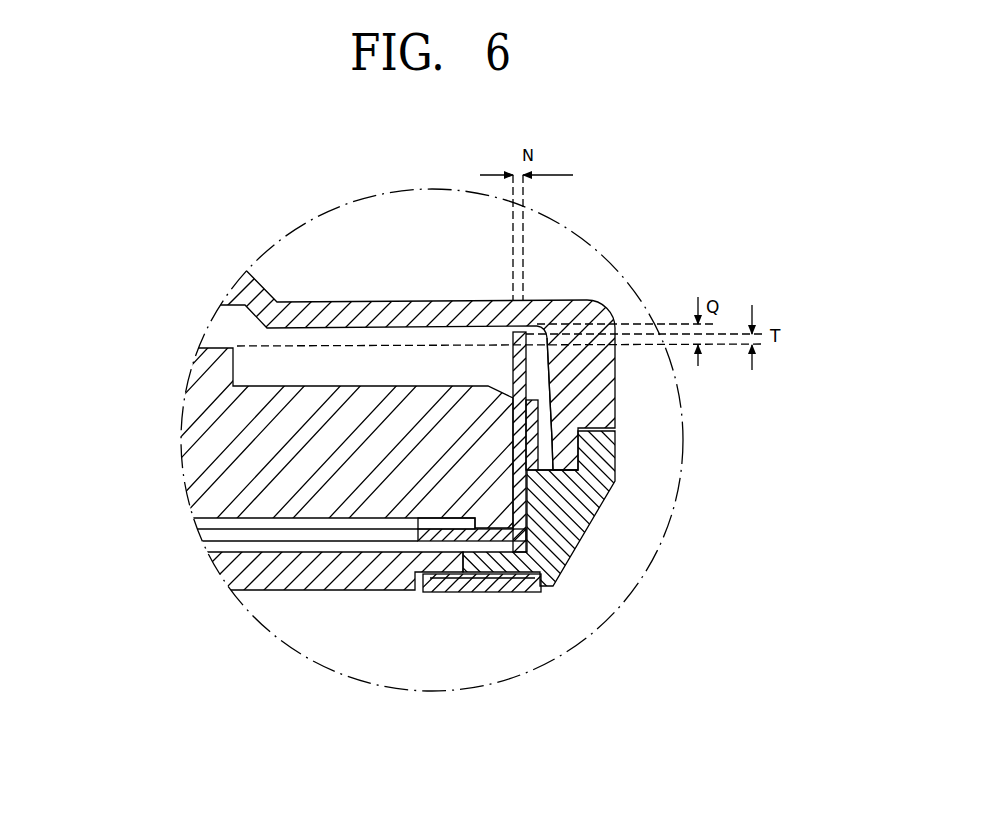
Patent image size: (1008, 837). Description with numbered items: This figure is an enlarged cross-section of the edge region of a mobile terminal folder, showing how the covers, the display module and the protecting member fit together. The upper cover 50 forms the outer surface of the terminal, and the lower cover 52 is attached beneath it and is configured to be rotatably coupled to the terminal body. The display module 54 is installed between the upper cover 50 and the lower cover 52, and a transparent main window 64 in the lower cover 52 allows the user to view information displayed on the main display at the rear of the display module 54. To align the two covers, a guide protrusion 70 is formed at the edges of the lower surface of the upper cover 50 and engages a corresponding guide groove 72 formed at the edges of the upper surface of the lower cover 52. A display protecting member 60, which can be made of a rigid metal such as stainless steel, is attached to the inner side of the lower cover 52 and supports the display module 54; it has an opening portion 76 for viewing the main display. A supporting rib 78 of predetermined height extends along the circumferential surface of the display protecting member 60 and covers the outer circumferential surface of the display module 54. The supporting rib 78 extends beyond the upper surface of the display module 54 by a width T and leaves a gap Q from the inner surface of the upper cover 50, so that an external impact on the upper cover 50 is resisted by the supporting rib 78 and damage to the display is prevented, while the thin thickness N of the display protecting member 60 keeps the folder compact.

The upper cover 50 is at (593, 366).
The lower cover 52 is at (568, 560).
The display module 54 is at (210, 443).
The display protecting member 60 is at (507, 592).
The transparent main window 64 is at (218, 570).
The guide protrusion 70 is at (553, 455).
The guide groove 72 is at (568, 503).
The opening portion 76 is at (397, 541).
The supporting rib 78 is at (520, 383).